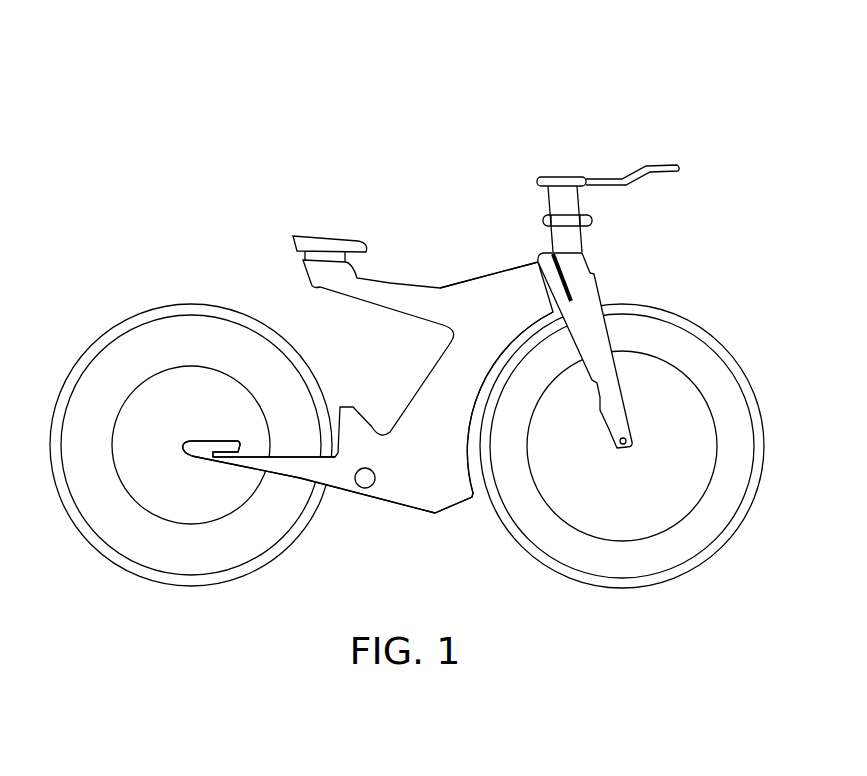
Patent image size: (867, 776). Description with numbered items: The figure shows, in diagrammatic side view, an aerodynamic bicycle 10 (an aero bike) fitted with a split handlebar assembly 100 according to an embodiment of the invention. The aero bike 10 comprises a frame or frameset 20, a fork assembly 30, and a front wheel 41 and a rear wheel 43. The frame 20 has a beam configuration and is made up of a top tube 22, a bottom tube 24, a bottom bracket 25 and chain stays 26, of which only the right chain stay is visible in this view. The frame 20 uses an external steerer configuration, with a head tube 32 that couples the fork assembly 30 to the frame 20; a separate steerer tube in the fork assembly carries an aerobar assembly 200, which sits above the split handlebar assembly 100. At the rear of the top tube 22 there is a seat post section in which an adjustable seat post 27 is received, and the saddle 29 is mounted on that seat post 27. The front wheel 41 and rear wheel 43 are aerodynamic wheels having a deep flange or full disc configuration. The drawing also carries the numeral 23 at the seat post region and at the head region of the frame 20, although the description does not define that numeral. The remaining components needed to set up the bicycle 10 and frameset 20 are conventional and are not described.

The aerodynamic bicycle 10 is at (416, 319).
The frame 20 is at (390, 277).
The top tube 22 is at (438, 288).
The vertical frame member 23 is at (330, 282).
The bottom tube 24 is at (445, 460).
The bottom bracket 25 is at (388, 492).
The chain stays 26 is at (252, 462).
The adjustable seat post 27 is at (293, 248).
The saddle 29 is at (338, 236).
The fork assembly 30 is at (607, 305).
The head tube 32 is at (540, 260).
The front wheel 41 is at (695, 353).
The rear wheel 43 is at (168, 330).
The split handlebar assembly 100 is at (602, 232).
The aerobar assembly 200 is at (573, 170).